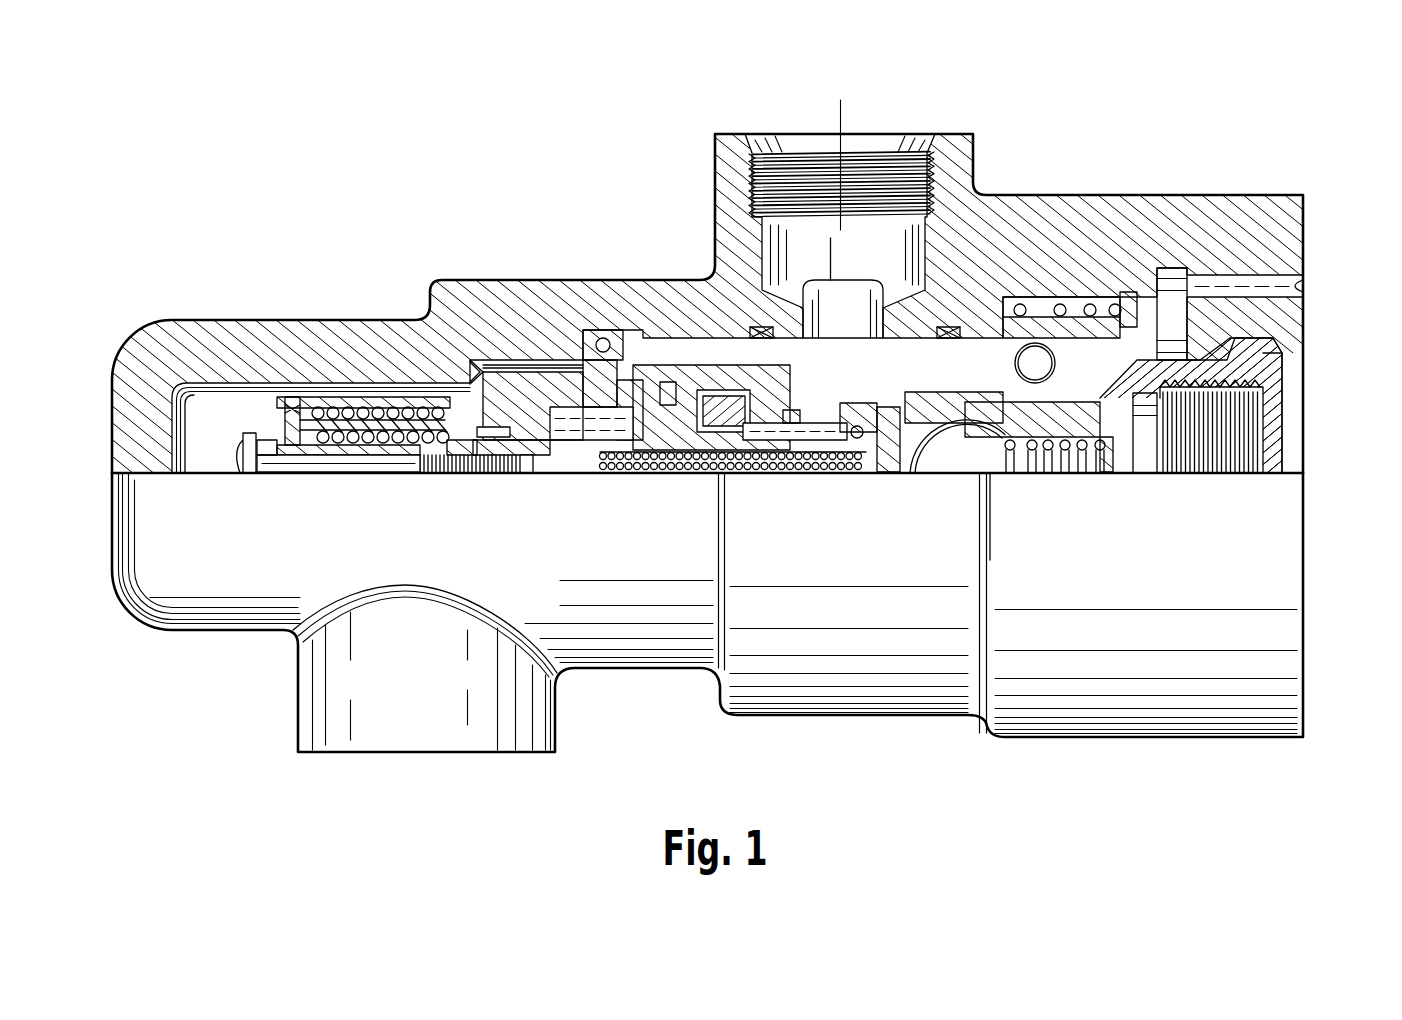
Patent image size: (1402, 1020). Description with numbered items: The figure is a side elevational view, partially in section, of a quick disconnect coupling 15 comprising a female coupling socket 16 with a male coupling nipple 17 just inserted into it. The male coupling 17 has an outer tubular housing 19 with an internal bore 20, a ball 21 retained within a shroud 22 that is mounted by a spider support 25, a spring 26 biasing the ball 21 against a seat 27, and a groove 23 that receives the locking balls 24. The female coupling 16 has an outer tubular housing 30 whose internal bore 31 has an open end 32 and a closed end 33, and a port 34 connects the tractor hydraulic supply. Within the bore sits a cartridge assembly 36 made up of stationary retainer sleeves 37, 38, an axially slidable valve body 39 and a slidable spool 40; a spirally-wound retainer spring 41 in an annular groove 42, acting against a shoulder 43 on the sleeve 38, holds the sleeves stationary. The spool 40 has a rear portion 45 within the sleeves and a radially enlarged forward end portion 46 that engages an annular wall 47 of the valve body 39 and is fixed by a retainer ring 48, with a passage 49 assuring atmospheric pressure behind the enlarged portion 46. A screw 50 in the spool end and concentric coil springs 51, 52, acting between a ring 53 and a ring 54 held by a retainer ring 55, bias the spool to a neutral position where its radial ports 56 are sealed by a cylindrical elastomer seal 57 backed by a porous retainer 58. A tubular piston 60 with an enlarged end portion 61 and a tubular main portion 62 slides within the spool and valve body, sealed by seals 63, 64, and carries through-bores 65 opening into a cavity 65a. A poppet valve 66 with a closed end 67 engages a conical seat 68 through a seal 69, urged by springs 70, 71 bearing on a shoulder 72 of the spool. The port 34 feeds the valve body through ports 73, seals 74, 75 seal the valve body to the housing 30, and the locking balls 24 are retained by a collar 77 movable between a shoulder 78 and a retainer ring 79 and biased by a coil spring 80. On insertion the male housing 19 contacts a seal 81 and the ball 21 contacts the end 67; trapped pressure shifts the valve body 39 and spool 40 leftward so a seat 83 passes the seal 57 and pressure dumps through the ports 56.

The quick disconnect coupling 15 is at (1288, 133).
The female coupling socket 16 is at (1303, 195).
The male coupling nipple 17 is at (1272, 370).
The outer tubular housing 19 is at (1250, 350).
The internal bore 20 is at (1190, 432).
The ball 21 is at (990, 473).
The shroud 22 is at (1130, 473).
The groove 23 is at (1140, 372).
The locking balls 24 is at (1018, 470).
The spider support 25 is at (1150, 460).
The spring 26 is at (1052, 470).
The seat 27 is at (952, 472).
The outer tubular housing 30 is at (1245, 230).
The internal bore 31 is at (1300, 287).
The open end 32 is at (1303, 378).
The closed end 33 is at (190, 420).
The port 34 is at (820, 175).
The cartridge assembly 36 is at (1160, 324).
The retainer sleeve 37 is at (282, 410).
The retainer sleeve 38 is at (440, 420).
The valve body 39 is at (705, 340).
The spool 40 is at (462, 472).
The retainer spring 41 is at (605, 335).
The annular groove 42 is at (583, 380).
The shoulder 43 is at (562, 420).
The rear portion 45 is at (440, 455).
The radially enlarged forward end portion 46 is at (690, 390).
The annular wall 47 is at (803, 300).
The annular retainer ring 48 is at (660, 385).
The passage 49 is at (722, 380).
The screw 50 is at (248, 472).
The coil spring 51 is at (330, 457).
The coil spring 52 is at (340, 415).
The ring 53 is at (430, 440).
The ring 54 is at (290, 452).
The retainer ring 55 is at (290, 415).
The ports 56 is at (545, 455).
The elastomer seal 57 is at (485, 400).
The porous retainer 58 is at (522, 400).
The piston 60 is at (735, 440).
The radially enlarged end portion 61 is at (700, 472).
The tubular main portion 62 is at (815, 450).
The seal 63 is at (705, 420).
The seal 64 is at (790, 440).
The through-bores 65 is at (762, 470).
The cavity 65a is at (658, 472).
The poppet valve 66 is at (885, 472).
The closed right end 67 is at (905, 440).
The conical seat 68 is at (1030, 380).
The seal 69 is at (850, 450).
The coil spring 70 is at (600, 470).
The coil spring 71 is at (638, 470).
The shoulder 72 is at (562, 472).
The ports 73 is at (858, 320).
The seal 74 is at (755, 327).
The seal 75 is at (948, 332).
The collar 77 is at (1060, 305).
The shoulder 78 is at (985, 338).
The retainer ring 79 is at (1170, 268).
The coil spring 80 is at (1128, 292).
The seal 81 is at (912, 300).
The seat 83 is at (492, 472).